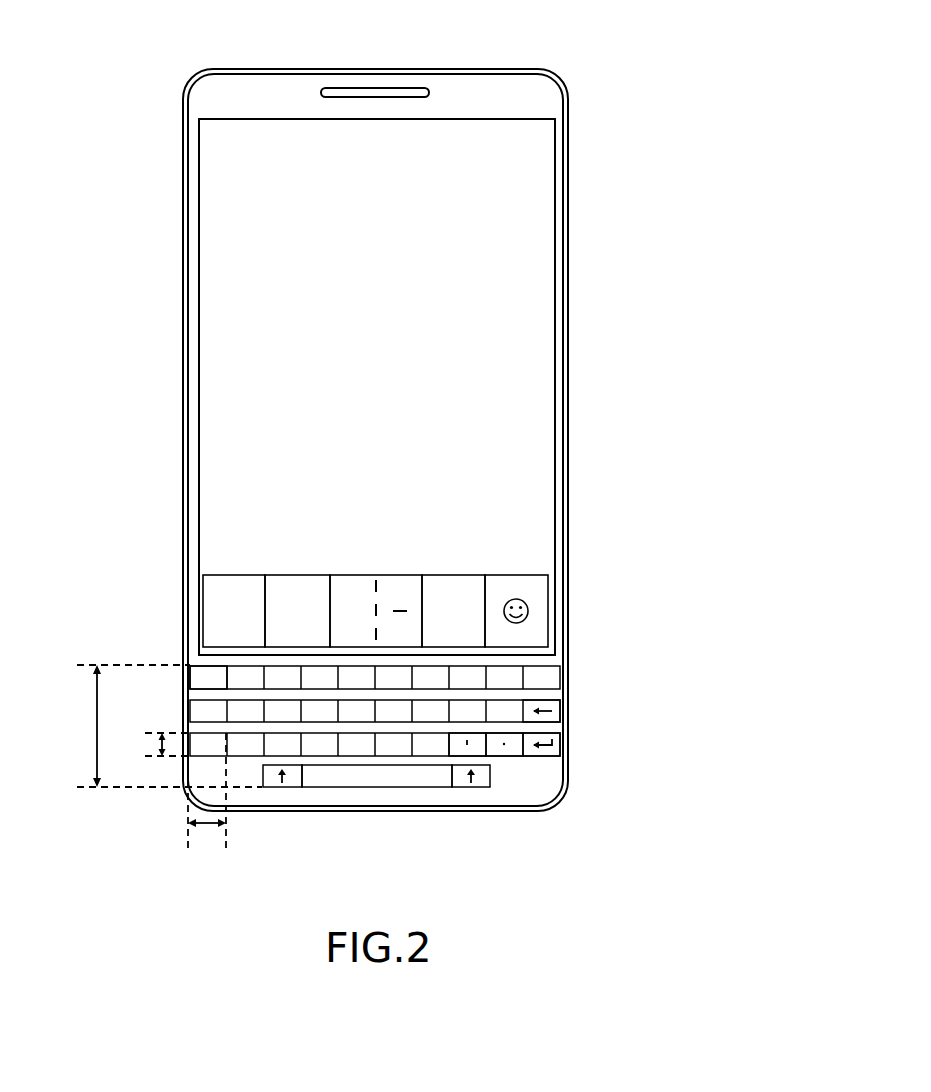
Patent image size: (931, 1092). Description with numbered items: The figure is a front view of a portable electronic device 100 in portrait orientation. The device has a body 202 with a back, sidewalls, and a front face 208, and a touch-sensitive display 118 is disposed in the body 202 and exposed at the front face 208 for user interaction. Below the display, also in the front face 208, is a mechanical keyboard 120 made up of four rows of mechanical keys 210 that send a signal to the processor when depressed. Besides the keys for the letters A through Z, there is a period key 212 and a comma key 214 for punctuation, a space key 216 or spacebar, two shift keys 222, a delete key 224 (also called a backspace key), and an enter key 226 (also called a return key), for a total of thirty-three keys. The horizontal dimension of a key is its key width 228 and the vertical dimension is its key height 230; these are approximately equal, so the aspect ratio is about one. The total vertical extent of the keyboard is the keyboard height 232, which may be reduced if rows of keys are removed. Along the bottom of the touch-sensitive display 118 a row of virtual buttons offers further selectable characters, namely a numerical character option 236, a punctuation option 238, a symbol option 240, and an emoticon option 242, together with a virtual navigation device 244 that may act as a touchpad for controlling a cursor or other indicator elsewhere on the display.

The portable electronic device 100 is at (628, 118).
The body 202 is at (335, 69).
The front face 208 is at (495, 93).
The touch-sensitive display 118 is at (535, 372).
The keyboard 120 is at (555, 683).
The mechanical keys 210 is at (195, 676).
The period key 212 is at (478, 748).
The comma key 214 is at (516, 745).
The space key 216 is at (375, 788).
The shift keys 222 is at (278, 790).
The delete key 224 is at (555, 718).
The enter key 226 is at (555, 752).
The key width 228 is at (205, 825).
The key height 230 is at (158, 745).
The keyboard height 232 is at (95, 738).
The numerical character option 236 is at (222, 597).
The punctuation option 238 is at (285, 575).
The symbol option 240 is at (465, 585).
The emoticon option 242 is at (540, 593).
The virtual navigation device 244 is at (400, 588).